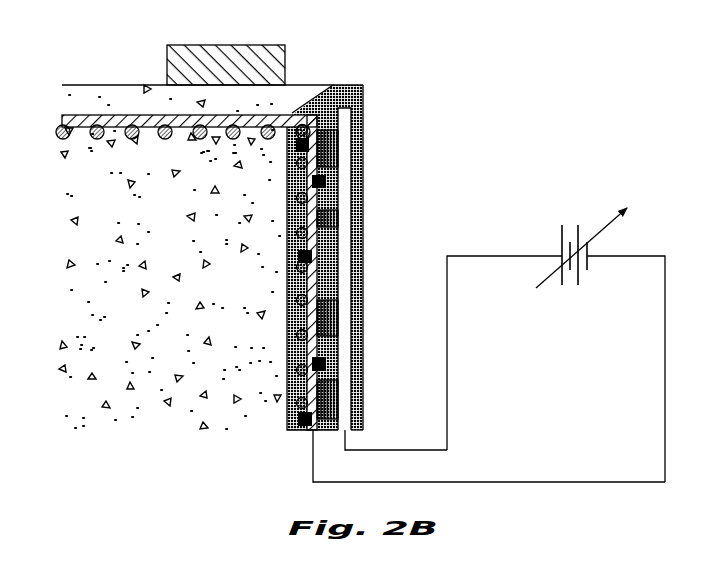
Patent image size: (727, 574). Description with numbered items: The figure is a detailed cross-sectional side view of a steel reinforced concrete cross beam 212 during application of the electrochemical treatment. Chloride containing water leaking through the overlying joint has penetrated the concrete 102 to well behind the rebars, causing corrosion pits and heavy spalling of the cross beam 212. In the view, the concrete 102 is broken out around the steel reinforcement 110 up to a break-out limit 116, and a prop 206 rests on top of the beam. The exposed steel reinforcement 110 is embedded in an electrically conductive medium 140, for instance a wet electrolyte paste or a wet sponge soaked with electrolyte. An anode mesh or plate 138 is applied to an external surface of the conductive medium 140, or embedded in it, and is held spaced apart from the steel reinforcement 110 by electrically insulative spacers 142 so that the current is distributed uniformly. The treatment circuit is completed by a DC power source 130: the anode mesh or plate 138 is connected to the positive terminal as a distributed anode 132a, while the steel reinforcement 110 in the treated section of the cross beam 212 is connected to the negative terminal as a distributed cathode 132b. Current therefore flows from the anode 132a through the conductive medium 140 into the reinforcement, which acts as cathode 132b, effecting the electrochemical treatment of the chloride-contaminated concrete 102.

The concrete 102 is at (122, 383).
The cross beam 212 is at (131, 312).
The prop 206 is at (166, 67).
The steel reinforcement 110 is at (180, 138).
The break-out limit 116 is at (318, 101).
The electrically conductive medium 140 is at (357, 142).
The anode mesh or plate 138 is at (344, 181).
The electrically insulative spacer 142 is at (320, 220).
The anode 132a is at (364, 442).
The cathode 132b is at (307, 443).
The DC power source 130 is at (583, 207).